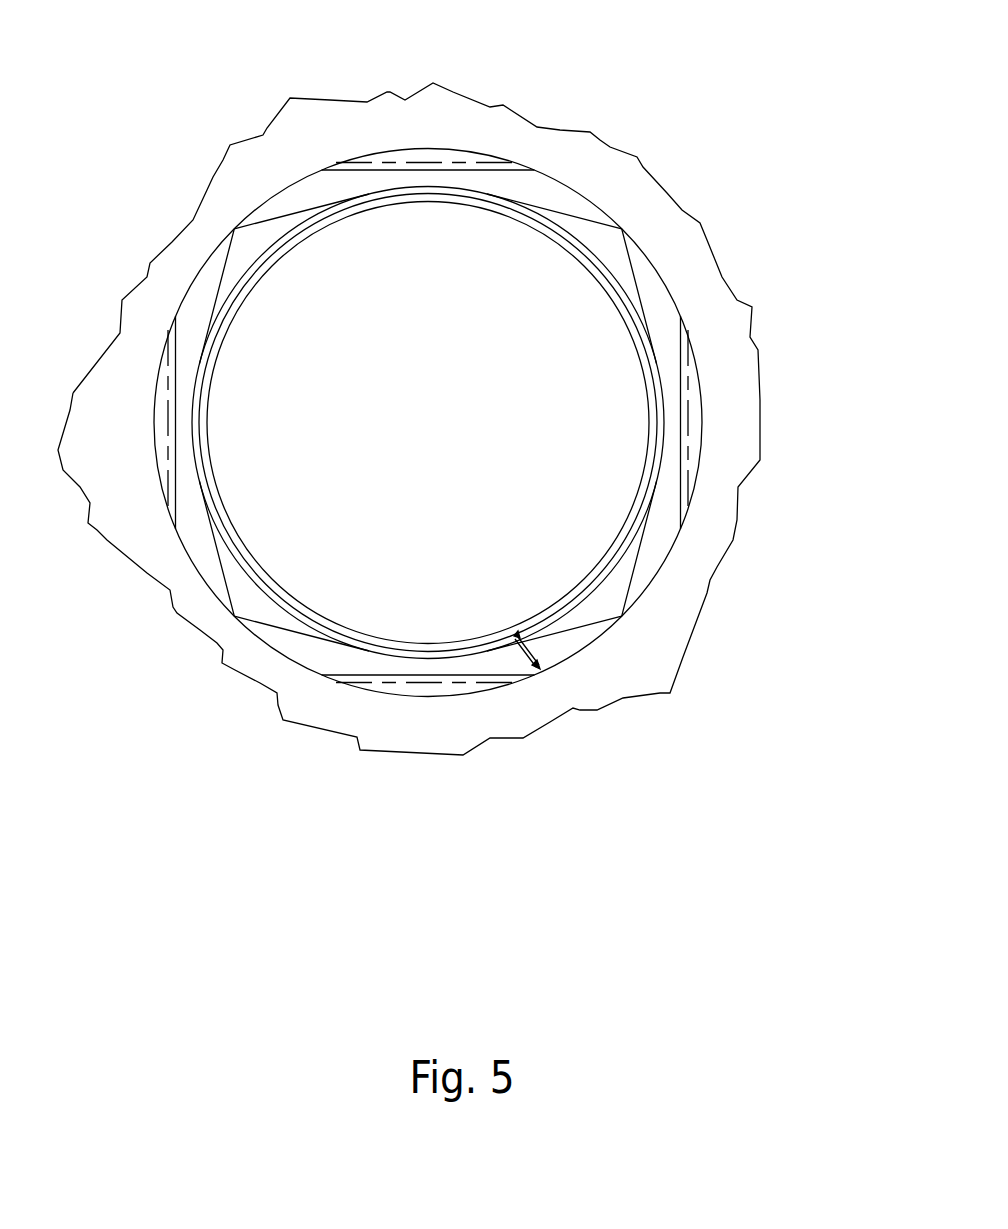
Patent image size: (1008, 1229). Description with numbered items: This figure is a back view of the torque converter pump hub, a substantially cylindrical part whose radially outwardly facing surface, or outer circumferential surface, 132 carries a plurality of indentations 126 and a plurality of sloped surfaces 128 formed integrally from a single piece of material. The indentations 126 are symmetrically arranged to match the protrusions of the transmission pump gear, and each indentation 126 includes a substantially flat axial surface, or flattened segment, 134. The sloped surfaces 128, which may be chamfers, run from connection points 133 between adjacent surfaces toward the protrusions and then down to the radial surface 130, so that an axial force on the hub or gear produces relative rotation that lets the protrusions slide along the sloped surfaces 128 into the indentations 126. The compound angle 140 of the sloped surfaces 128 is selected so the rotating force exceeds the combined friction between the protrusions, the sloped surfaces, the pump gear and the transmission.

The plurality of indentations 126 is at (699, 420).
The plurality of sloped surfaces 128 is at (658, 297).
The radial surface 130 is at (487, 202).
The radially outwardly facing surface 132 is at (195, 553).
The connection points 133 is at (234, 228).
The flat axial surface 134 is at (683, 497).
The compound angle 140 is at (517, 657).